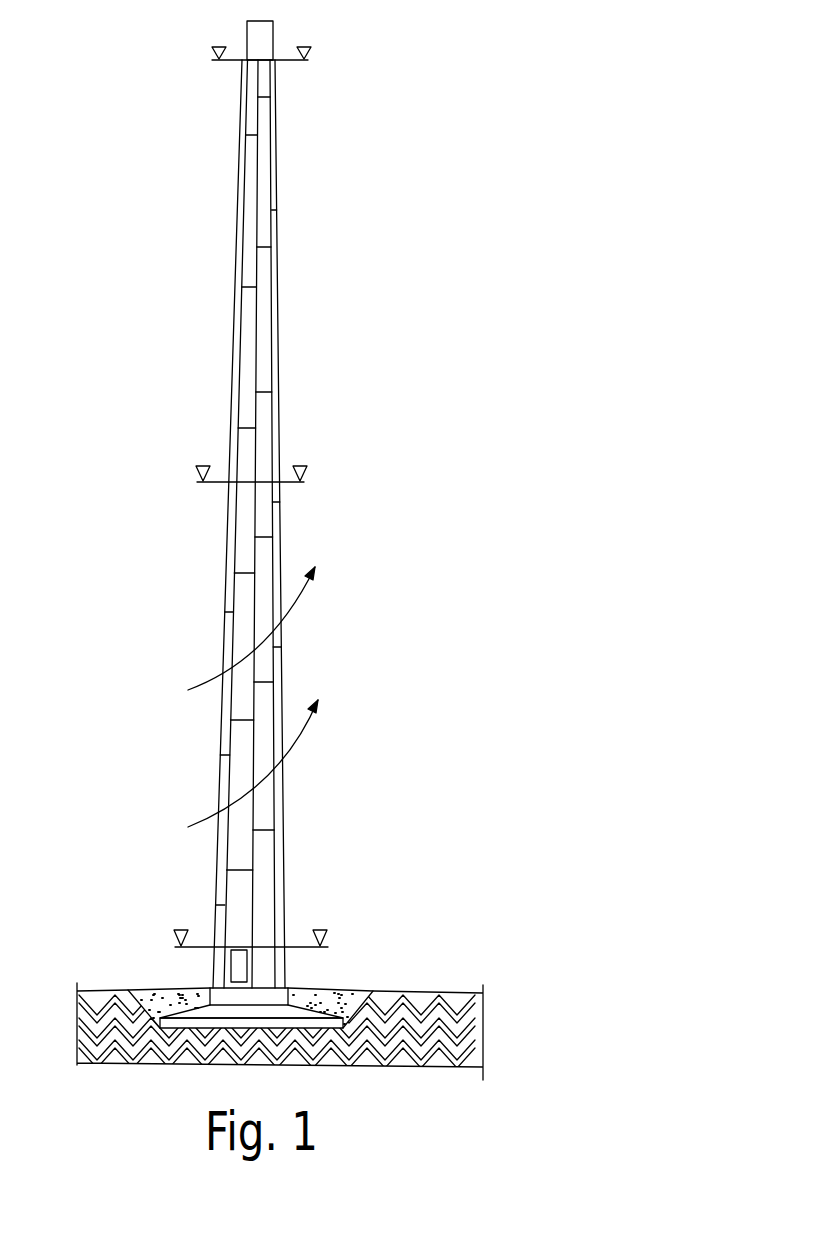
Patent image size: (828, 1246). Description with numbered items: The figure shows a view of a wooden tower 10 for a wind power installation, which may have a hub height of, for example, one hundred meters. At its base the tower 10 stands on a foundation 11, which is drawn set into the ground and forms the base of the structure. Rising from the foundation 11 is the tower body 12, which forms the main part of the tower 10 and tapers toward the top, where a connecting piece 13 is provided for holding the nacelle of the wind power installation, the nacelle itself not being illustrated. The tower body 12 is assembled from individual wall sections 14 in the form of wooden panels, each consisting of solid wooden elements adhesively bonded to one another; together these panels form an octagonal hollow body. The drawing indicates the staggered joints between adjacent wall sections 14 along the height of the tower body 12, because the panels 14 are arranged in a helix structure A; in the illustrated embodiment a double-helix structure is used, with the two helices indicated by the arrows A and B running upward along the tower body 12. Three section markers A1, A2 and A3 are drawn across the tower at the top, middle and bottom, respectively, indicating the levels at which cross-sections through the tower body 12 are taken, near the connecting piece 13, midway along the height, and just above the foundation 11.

The tower 10 is at (291, 548).
The foundation 11 is at (325, 990).
The tower body 12 is at (240, 504).
The connecting piece 13 is at (263, 48).
The wall section 14 is at (259, 310).
The section line A1 is at (261, 38).
The section line A2 is at (251, 461).
The section line A3 is at (253, 924).
The helix structure A is at (265, 753).
The helix B is at (263, 621).